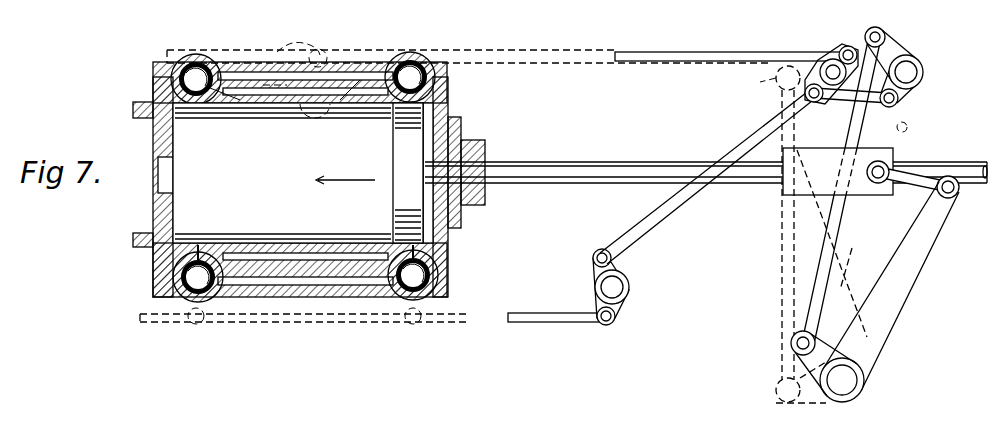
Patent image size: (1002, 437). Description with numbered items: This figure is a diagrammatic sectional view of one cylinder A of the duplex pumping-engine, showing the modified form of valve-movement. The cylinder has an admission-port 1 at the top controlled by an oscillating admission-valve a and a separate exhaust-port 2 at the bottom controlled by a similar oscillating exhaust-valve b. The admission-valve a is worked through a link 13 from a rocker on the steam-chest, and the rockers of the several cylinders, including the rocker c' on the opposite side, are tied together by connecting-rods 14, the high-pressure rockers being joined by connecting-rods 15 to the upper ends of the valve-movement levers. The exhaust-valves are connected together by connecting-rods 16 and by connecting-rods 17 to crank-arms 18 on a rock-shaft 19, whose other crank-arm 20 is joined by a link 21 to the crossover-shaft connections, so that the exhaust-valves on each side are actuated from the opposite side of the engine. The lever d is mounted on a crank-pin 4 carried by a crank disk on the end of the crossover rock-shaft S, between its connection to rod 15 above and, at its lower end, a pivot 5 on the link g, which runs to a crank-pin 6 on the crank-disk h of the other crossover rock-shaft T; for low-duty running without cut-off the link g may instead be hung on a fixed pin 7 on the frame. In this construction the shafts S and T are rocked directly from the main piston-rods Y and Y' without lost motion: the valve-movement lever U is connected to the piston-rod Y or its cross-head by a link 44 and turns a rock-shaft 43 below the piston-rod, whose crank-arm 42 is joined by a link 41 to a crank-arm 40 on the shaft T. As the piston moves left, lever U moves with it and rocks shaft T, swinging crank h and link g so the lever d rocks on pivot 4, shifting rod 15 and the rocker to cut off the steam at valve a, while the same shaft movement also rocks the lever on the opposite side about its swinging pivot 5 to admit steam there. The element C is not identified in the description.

The admission-port 1 is at (166, 92).
The exhaust-port 2 is at (200, 250).
The crank-pin 4 is at (838, 54).
The pivot 5 is at (818, 99).
The crank-pin 6 is at (897, 103).
The fixed pin 7 is at (908, 127).
The link 13 is at (262, 100).
The connecting-rod 14 is at (232, 52).
The connecting-rod 15 is at (683, 47).
The connecting-rod 16 is at (273, 323).
The connecting-rod 17 is at (566, 323).
The crank-arm 18 is at (614, 315).
The rock-shaft 19 is at (612, 287).
The crank-arm 20 is at (614, 262).
The link 21 is at (776, 150).
The crank-arm 40 is at (886, 38).
The link 41 is at (838, 224).
The crank-arm 42 is at (822, 337).
The rock-shaft 43 is at (842, 380).
The link 44 is at (783, 185).
The admission-valve a is at (174, 75).
The exhaust-valve b is at (181, 286).
The lever d is at (778, 82).
The link g is at (862, 102).
The crank-disk h is at (912, 86).
The cylinder A is at (298, 173).
The cam C is at (304, 48).
The crossover rock-shaft S is at (830, 52).
The crossover rock-shaft T is at (912, 72).
The valve-movement lever U is at (891, 286).
The main piston-rod Y is at (706, 163).
The main piston-rod Y' is at (832, 243).
The rocker c' is at (337, 429).